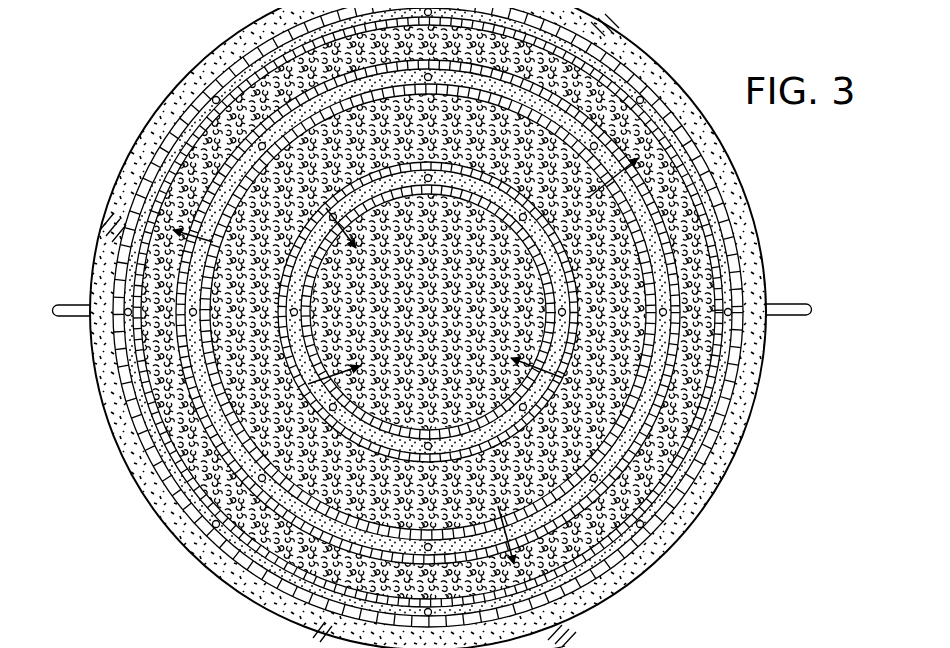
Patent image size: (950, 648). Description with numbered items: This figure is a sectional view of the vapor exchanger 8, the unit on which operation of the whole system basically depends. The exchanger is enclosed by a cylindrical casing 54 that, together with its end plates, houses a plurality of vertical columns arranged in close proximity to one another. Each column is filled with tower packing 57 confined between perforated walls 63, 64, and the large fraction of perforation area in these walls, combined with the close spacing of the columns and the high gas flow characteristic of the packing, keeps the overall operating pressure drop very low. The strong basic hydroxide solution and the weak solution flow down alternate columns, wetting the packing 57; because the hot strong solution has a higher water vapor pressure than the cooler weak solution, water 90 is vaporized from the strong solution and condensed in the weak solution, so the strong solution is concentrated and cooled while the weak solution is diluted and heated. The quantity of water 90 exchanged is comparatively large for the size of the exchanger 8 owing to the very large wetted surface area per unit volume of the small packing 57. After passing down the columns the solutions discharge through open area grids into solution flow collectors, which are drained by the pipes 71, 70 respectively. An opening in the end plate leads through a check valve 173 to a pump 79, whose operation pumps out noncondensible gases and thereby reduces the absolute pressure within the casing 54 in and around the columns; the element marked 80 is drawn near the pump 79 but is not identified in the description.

The vapor exchanger 8 is at (119, 132).
The cylindrical casing 54 is at (160, 521).
The tower packing 57 is at (428, 312).
The perforated wall 63 is at (194, 426).
The perforated wall 64 is at (360, 452).
The drain pipe 70 is at (780, 294).
The drain pipe 71 is at (68, 297).
The water 90 is at (268, 382).
The check valve 173 is at (536, 644).
The pump 79 is at (630, 644).
The base 80 is at (696, 643).